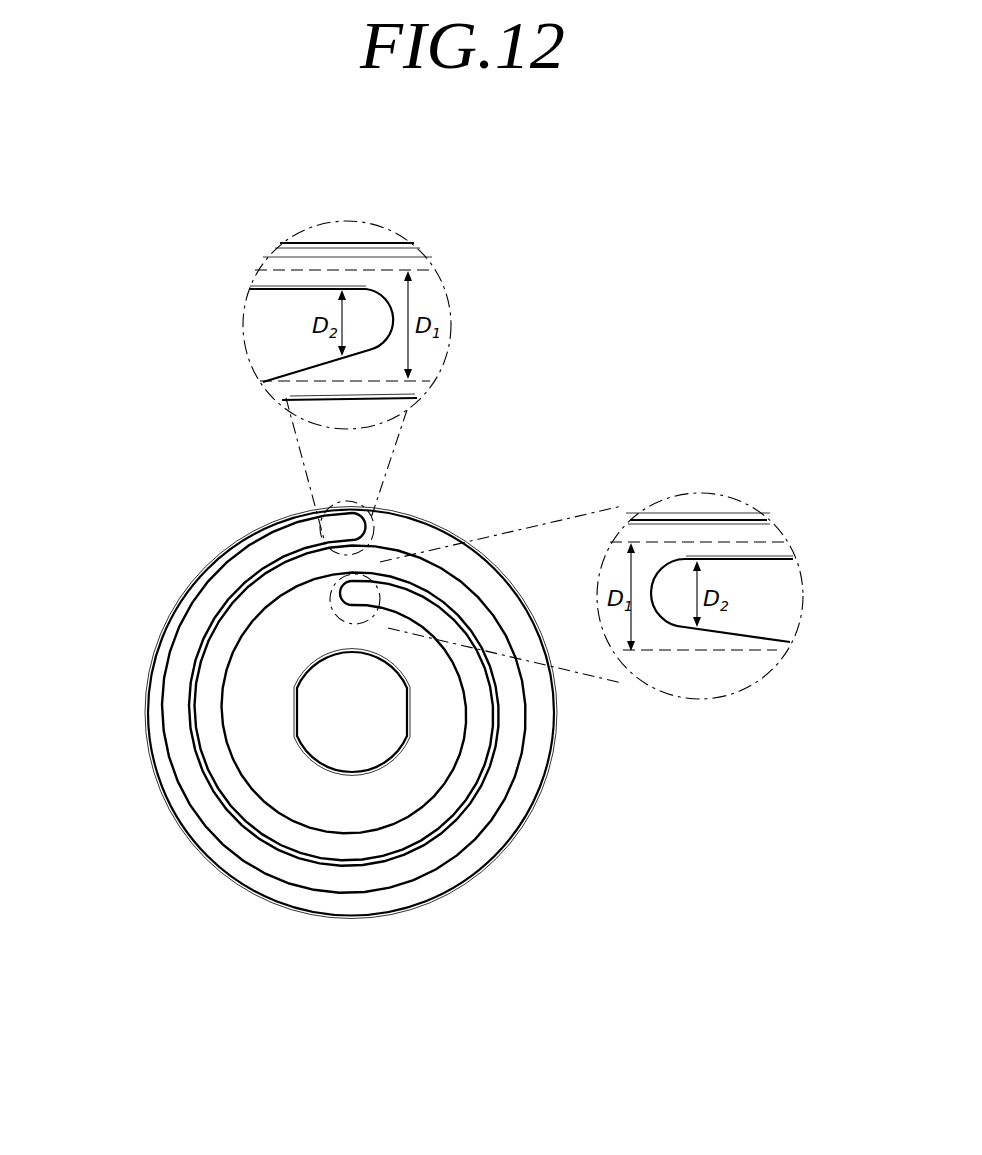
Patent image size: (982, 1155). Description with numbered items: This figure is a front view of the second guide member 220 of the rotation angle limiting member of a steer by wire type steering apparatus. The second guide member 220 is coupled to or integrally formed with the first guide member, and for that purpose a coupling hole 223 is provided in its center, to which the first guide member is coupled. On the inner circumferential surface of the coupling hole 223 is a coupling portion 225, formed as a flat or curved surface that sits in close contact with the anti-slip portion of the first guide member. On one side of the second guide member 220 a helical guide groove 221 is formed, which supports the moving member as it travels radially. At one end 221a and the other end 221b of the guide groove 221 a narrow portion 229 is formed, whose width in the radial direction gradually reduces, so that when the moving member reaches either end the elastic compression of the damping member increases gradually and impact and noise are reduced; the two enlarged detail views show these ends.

The second guide member 220 is at (152, 492).
The helical guide groove 221 is at (502, 770).
The one end of the guide groove 221a is at (394, 321).
The other end of the guide groove 221b is at (653, 591).
The coupling hole 223 is at (350, 772).
The coupling portion 225 is at (405, 712).
The narrow portion 229 is at (312, 288).